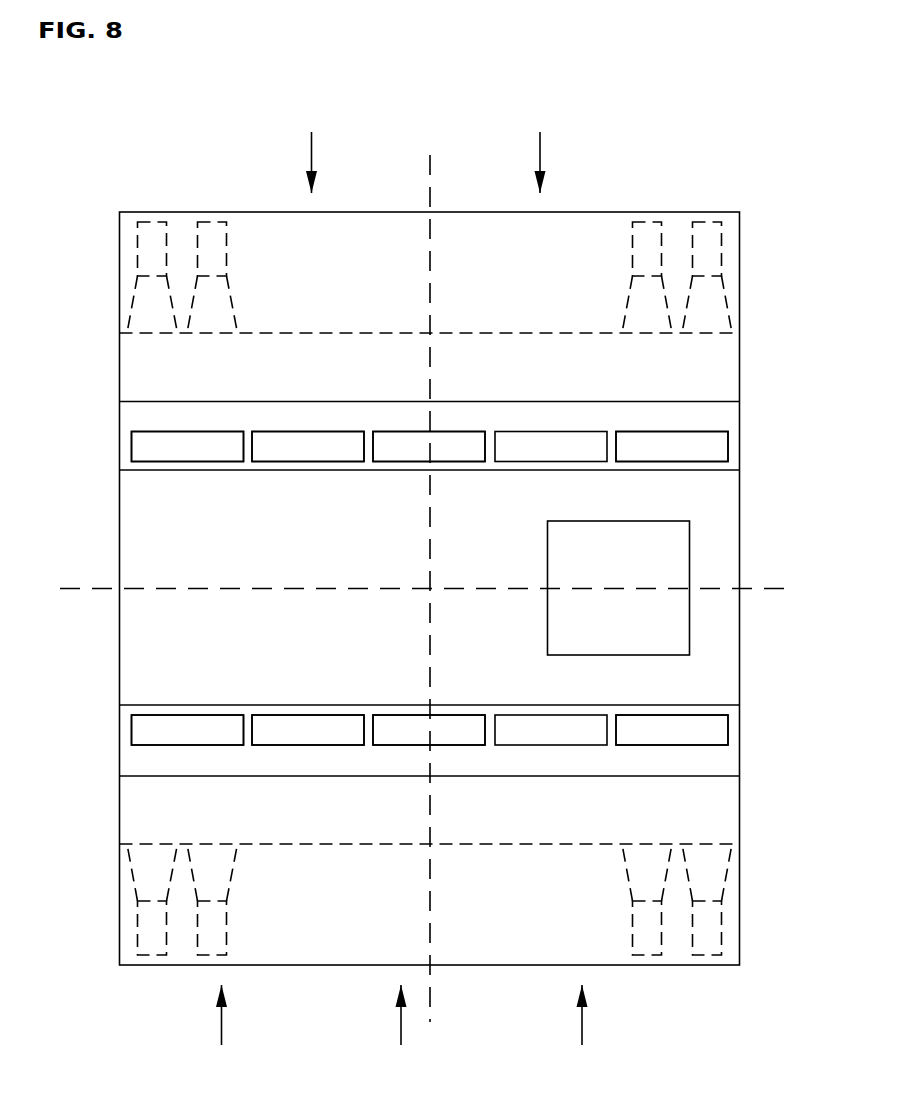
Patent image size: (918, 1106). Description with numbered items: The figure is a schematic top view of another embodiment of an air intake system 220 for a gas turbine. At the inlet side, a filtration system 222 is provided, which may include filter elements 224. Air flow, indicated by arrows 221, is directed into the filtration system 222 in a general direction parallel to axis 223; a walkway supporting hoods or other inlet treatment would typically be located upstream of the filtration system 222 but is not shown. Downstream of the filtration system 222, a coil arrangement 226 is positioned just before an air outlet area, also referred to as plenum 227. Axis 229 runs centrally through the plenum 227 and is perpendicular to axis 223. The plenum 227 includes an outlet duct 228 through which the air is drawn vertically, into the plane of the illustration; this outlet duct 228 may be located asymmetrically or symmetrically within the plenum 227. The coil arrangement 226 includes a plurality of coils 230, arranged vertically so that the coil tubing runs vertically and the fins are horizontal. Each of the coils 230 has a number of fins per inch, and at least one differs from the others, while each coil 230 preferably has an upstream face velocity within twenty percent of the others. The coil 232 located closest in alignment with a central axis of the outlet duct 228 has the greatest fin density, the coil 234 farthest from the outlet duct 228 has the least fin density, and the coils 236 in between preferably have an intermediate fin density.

The air intake system 220 is at (746, 155).
The arrows 221 is at (312, 152).
The filtration system 222 is at (729, 247).
The axis 223 is at (431, 574).
The filter elements 224 is at (137, 245).
The coil arrangement 226 is at (118, 452).
The plenum 227 is at (257, 627).
The outlet duct 228 is at (675, 521).
The axis 229 is at (355, 589).
The coils 230 is at (197, 467).
The coil 232 is at (716, 432).
The coil 234 is at (163, 462).
The coils 236 is at (327, 462).